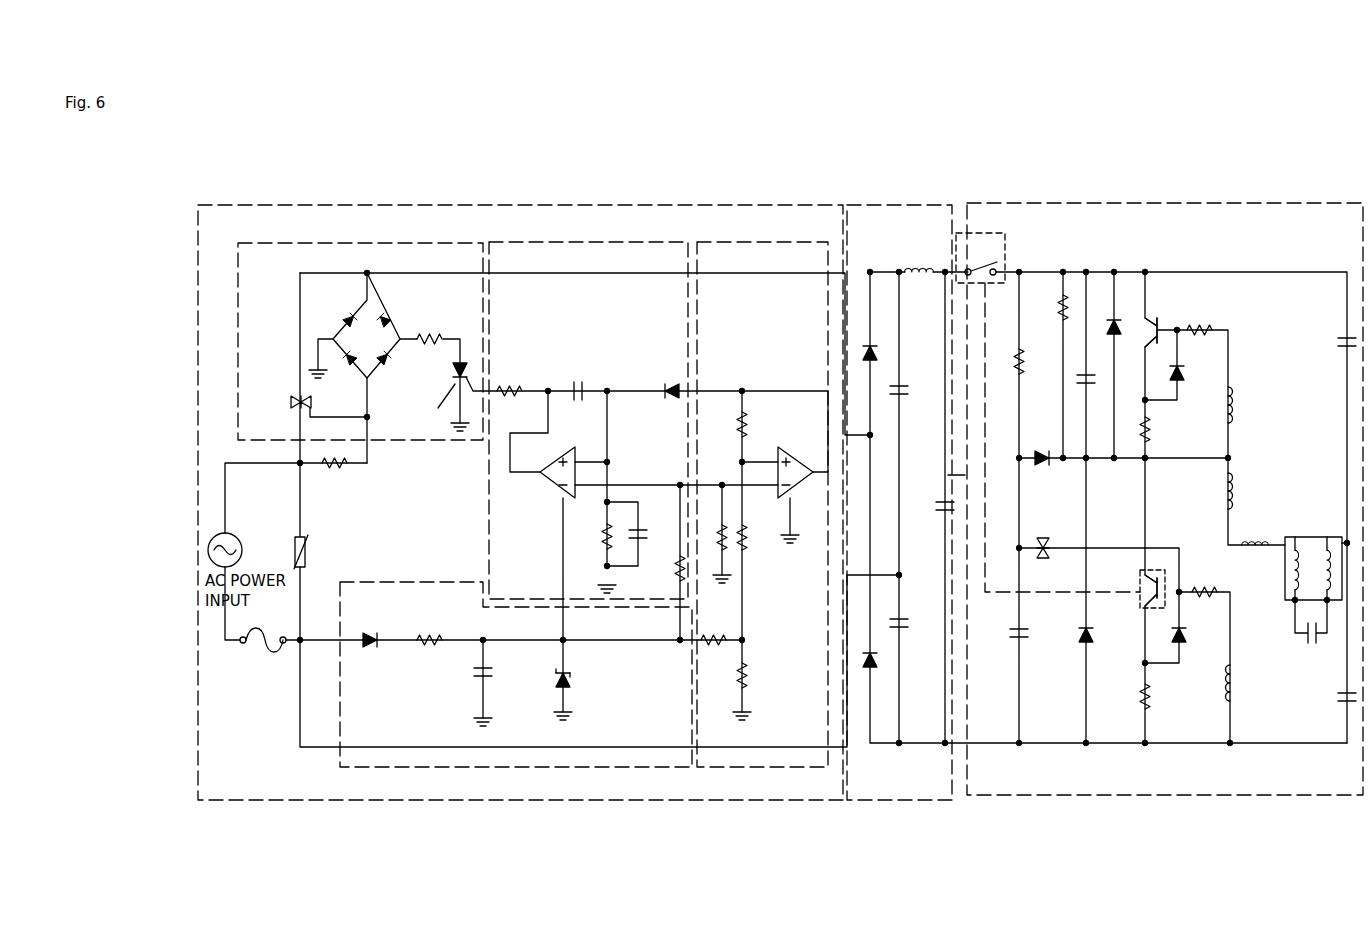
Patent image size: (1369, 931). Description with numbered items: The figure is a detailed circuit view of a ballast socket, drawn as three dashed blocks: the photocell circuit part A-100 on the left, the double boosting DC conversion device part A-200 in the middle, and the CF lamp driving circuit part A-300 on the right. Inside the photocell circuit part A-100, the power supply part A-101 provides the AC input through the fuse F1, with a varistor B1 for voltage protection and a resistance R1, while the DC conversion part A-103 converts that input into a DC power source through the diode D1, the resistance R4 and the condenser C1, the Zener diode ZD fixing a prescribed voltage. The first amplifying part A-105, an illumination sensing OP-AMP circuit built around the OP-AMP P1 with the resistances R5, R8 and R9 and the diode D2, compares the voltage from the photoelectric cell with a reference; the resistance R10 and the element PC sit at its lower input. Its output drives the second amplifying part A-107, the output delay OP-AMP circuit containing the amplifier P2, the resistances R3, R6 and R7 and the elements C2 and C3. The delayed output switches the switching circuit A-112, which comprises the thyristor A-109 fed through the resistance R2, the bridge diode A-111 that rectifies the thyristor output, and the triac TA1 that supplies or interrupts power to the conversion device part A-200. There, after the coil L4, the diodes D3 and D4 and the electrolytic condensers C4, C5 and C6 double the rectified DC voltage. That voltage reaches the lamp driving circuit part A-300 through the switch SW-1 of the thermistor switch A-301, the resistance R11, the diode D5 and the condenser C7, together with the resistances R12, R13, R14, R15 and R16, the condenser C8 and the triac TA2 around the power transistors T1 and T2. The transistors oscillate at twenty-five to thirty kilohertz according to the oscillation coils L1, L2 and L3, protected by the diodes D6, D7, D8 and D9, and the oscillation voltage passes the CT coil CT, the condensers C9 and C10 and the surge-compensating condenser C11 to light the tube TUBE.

The photocell circuit part A-100 is at (520, 502).
The power supply part A-101 is at (234, 533).
The DC conversion part A-103 is at (516, 674).
The first amplifying part A-105 is at (762, 504).
The second amplifying part A-107 is at (588, 420).
The thyristor (SCR) A-109 is at (429, 397).
The bridge diode A-111 is at (410, 300).
The switching circuit A-112 is at (360, 341).
The double boosting DC conversion device part A-200 is at (899, 502).
The CF lamp driving circuit part A-300 is at (1155, 499).
The thermistor switch A-301 is at (1020, 256).
The power switch SW-1 is at (980, 258).
The resistor R1 is at (334, 474).
The resistor R2 is at (430, 339).
The resistance R3 is at (509, 380).
The resistance R4 is at (429, 629).
The resistance R5 is at (729, 424).
The resistance R6 is at (597, 558).
The resistance R7 is at (668, 570).
The resistance R8 is at (711, 554).
The resistance R9 is at (754, 537).
The resistor R10 is at (713, 651).
The resistance R11 is at (1037, 361).
The resistor R12 is at (1046, 307).
The resistor R13 is at (1162, 429).
The resistor R14 is at (1203, 320).
The resistor R15 is at (1163, 696).
The resistor R16 is at (1207, 582).
The condenser C1 is at (494, 695).
The coil C2 is at (575, 381).
The coil C3 is at (649, 537).
The electrolytic condenser C4 is at (909, 392).
The electrolytic condenser C5 is at (911, 625).
The electrolytic condenser C6 is at (933, 507).
The condenser C7 is at (1031, 636).
The capacitor C8 is at (1093, 367).
The capacitor C9 is at (1311, 633).
The condenser C10 is at (1331, 701).
The condenser C11 is at (1330, 345).
The diode D1 is at (370, 630).
The diode D2 is at (670, 380).
The diode D3 is at (878, 344).
The diode D4 is at (879, 673).
The diode D5 is at (1040, 449).
The diode D6 is at (1123, 316).
The diode D7 is at (1100, 636).
The diode D8 is at (1191, 375).
The diode D9 is at (1192, 636).
The oscillation coil L1 is at (1250, 405).
The oscillation coil L2 is at (1250, 492).
The oscillation coil L3 is at (1248, 681).
The filter inductor L4 is at (919, 258).
The OP-AMP P1 is at (800, 495).
The amplifier P2 is at (551, 473).
The power transistor T1 is at (1157, 318).
The power transistor T2 is at (1138, 588).
The triac TA1 is at (281, 404).
The triac TA2 is at (1050, 562).
The Zener diode ZD is at (576, 694).
The photocoupler / variable resistor PC is at (753, 691).
The varistor B1 is at (313, 552).
The fuse F1 is at (263, 651).
The CT coil CT is at (1255, 557).
The tube TUBE is at (1316, 557).